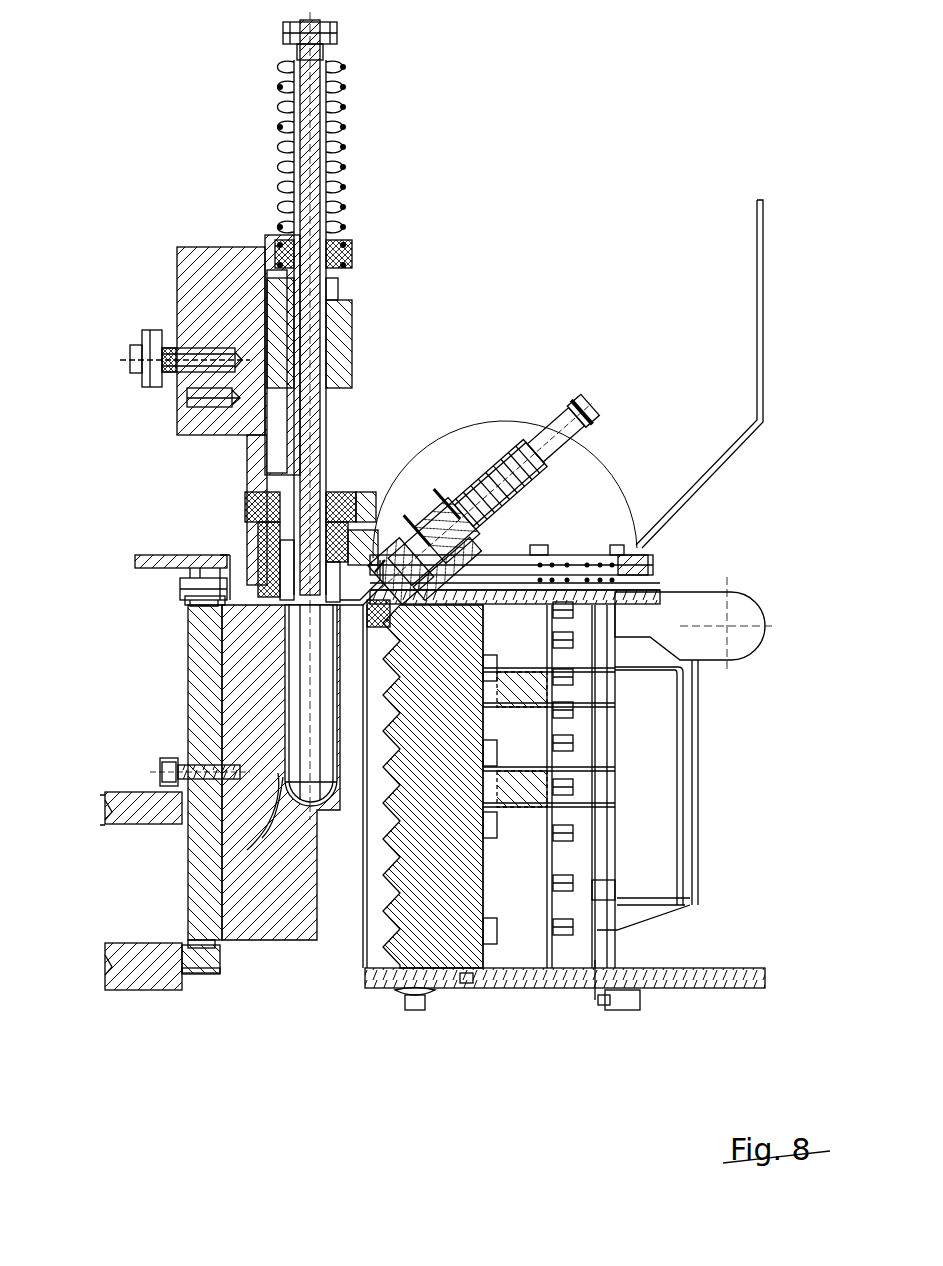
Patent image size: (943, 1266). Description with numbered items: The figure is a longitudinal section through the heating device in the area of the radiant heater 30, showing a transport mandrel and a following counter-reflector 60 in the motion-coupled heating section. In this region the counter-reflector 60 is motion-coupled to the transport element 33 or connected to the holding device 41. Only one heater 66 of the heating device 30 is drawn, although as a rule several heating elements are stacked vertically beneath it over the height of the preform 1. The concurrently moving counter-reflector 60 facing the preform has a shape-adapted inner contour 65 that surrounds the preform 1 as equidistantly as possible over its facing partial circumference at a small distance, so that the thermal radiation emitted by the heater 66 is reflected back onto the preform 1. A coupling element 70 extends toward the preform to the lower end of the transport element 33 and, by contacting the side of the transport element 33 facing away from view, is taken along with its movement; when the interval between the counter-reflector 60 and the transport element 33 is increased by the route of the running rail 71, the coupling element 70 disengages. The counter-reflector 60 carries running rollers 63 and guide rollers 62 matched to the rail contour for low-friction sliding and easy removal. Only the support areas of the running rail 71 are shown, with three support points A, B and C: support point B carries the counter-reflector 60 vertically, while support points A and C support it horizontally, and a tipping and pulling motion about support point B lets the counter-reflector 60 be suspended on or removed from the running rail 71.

The preform 1 is at (285, 678).
The radiant heater 30 is at (337, 983).
The transport element 33 is at (165, 222).
The holding device 41 is at (408, 332).
The counter-reflector 60 is at (253, 913).
The guide roller 62 is at (128, 822).
The running roller 63 is at (190, 572).
The inner contour 65 is at (247, 850).
The heater 66 is at (370, 562).
The coupling element 70 is at (213, 598).
The running rail 71 is at (152, 560).
The support point A is at (152, 588).
The support point B is at (137, 768).
The support point C is at (198, 988).